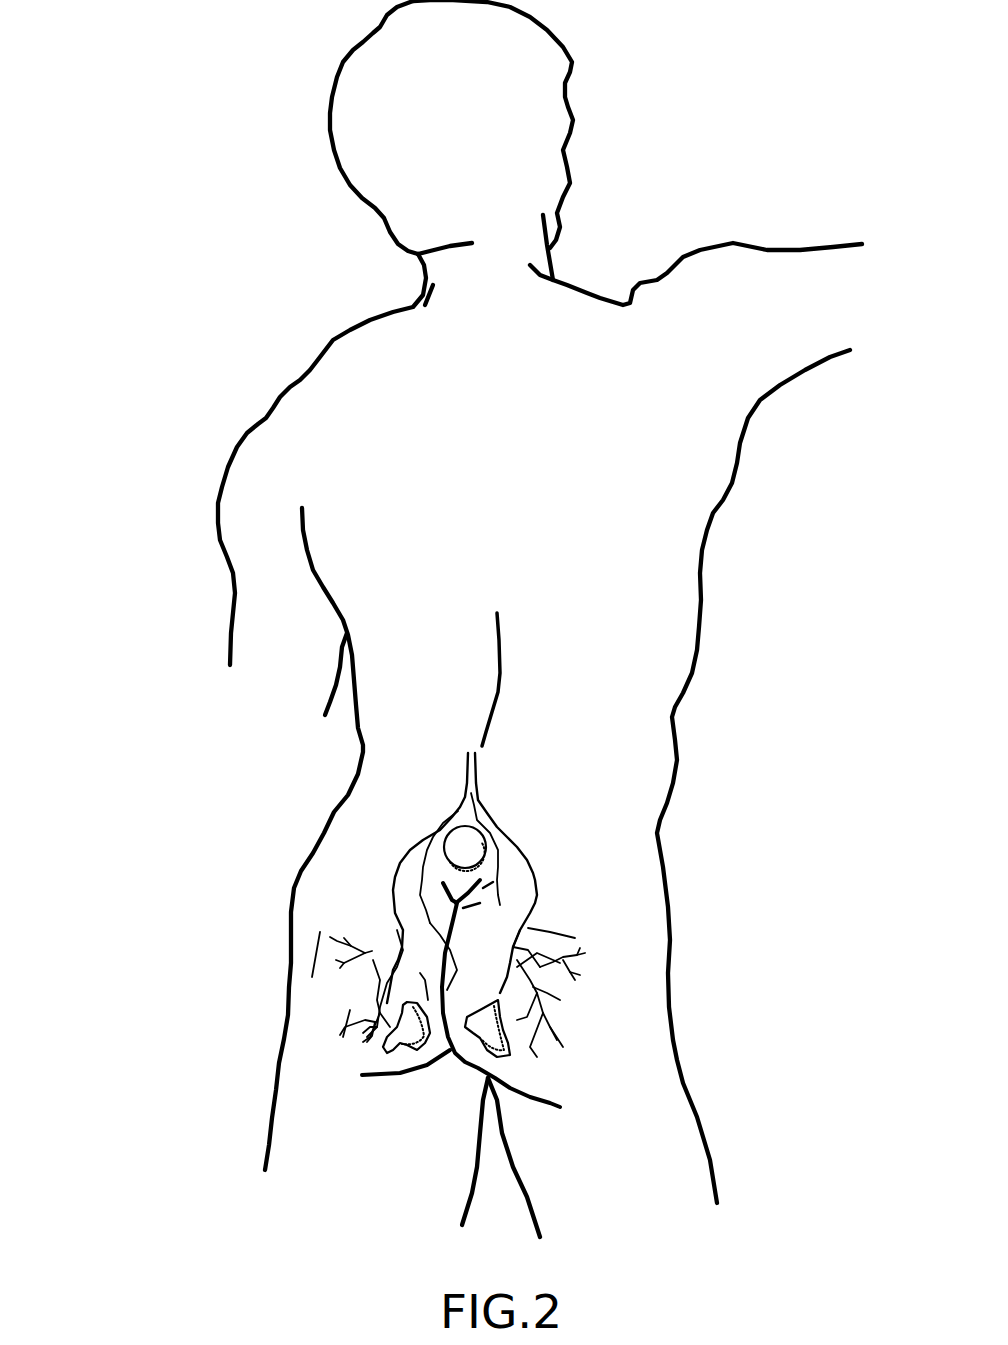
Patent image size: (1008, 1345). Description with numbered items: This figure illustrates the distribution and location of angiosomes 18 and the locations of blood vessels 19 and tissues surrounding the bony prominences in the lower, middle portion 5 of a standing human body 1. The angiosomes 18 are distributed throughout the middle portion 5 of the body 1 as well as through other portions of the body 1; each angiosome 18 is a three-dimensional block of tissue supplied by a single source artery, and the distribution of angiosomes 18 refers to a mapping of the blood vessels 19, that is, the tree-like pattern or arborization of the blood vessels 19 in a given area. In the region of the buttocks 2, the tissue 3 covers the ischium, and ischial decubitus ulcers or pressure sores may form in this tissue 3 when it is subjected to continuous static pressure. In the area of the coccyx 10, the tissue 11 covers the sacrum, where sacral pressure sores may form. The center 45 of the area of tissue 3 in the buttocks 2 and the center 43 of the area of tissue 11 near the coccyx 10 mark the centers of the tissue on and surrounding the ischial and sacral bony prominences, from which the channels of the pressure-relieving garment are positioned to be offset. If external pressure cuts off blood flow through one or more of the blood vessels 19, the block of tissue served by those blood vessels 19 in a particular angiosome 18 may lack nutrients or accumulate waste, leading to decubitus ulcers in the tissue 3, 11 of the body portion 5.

The body 1 is at (540, 618).
The buttocks 2 is at (462, 945).
The tissue 3 is at (438, 1031).
The middle portion 5 is at (216, 800).
The coccyx 10 is at (346, 878).
The tissue 11 is at (603, 873).
The angiosome 18 is at (480, 1008).
The blood vessels 19 is at (452, 935).
The center 43 is at (359, 814).
The center 45 is at (418, 1087).